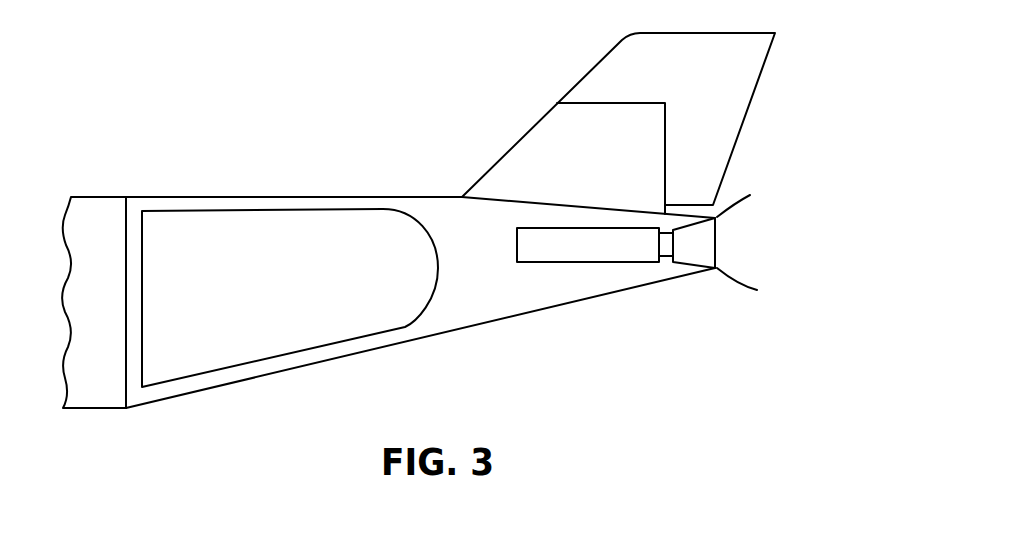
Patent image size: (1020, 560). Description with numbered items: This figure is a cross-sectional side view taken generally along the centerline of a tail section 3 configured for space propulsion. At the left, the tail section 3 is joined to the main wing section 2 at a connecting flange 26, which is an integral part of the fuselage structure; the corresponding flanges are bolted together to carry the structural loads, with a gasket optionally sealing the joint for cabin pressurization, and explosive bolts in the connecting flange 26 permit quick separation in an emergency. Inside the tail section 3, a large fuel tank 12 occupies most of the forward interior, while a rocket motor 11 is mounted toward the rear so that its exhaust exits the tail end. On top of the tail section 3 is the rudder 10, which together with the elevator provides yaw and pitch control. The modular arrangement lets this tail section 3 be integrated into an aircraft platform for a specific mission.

The main wing section 2 is at (98, 215).
The connecting flange 26 is at (128, 217).
The tail section 3 is at (457, 227).
The fuel tank 12 is at (227, 240).
The rudder 10 is at (608, 72).
The rocket motor 11 is at (608, 248).